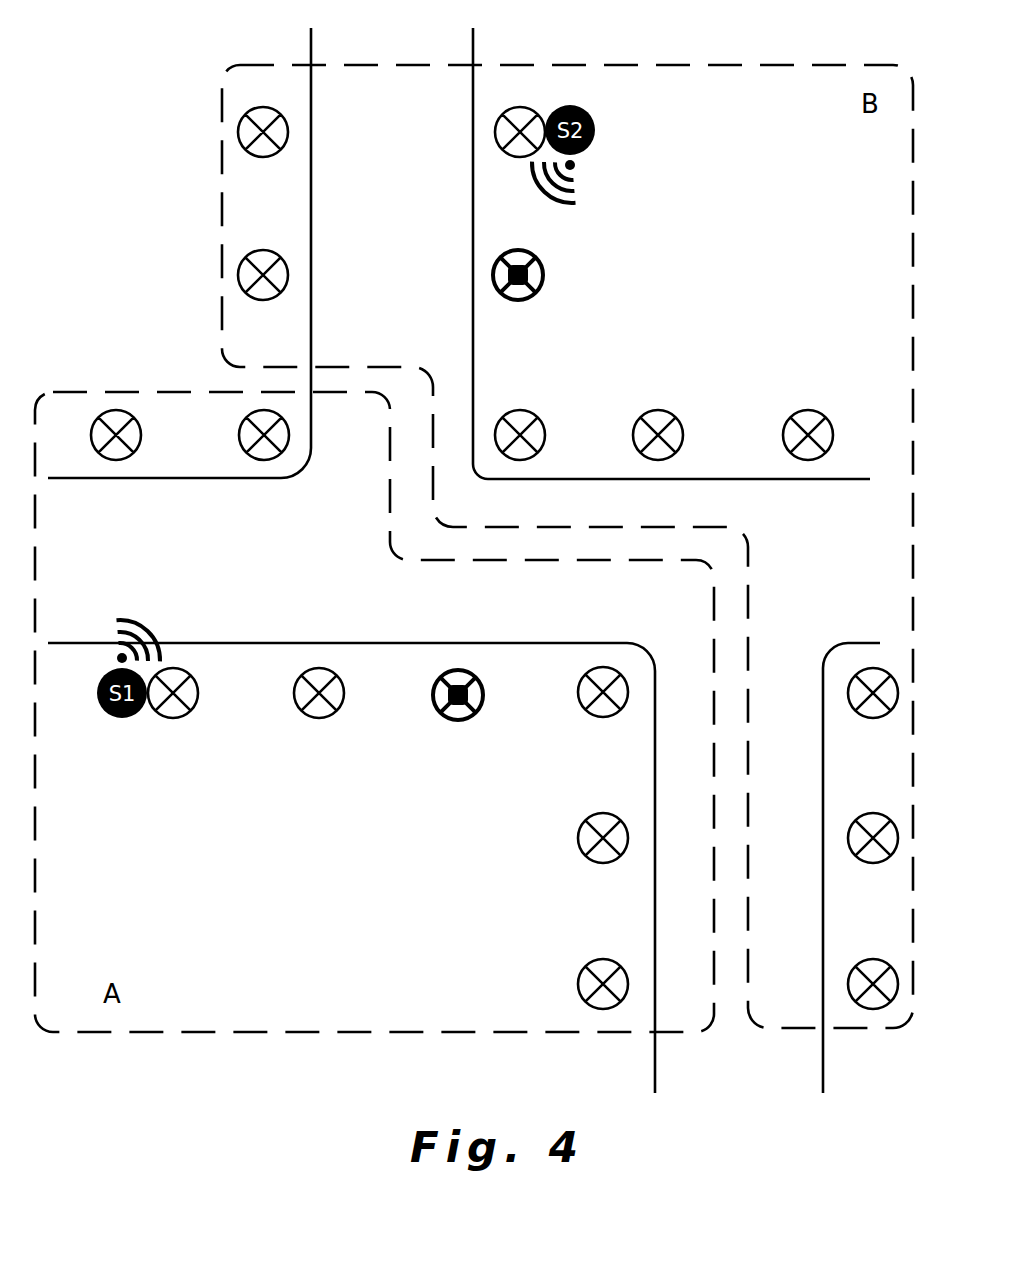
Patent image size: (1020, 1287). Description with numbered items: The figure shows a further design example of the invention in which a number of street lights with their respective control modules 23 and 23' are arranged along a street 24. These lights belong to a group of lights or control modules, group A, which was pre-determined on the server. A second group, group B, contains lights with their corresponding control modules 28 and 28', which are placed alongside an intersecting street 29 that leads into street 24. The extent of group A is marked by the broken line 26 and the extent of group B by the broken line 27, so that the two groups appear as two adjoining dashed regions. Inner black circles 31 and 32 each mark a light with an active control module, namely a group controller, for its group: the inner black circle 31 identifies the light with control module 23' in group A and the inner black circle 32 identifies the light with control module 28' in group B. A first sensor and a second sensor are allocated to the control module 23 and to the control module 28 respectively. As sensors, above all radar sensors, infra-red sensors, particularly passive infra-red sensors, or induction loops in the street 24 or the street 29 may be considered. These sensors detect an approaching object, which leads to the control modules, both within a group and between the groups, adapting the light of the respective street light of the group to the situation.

The control module 23 is at (345, 681).
The control module 23' is at (477, 717).
The street 24 is at (233, 582).
The broken line 26 is at (367, 1035).
The broken line 27 is at (405, 62).
The control module 28 is at (568, 558).
The control module 28' is at (537, 295).
The intersecting street 29 is at (407, 251).
The inner black circle 31 is at (442, 696).
The inner black circle 32 is at (530, 273).